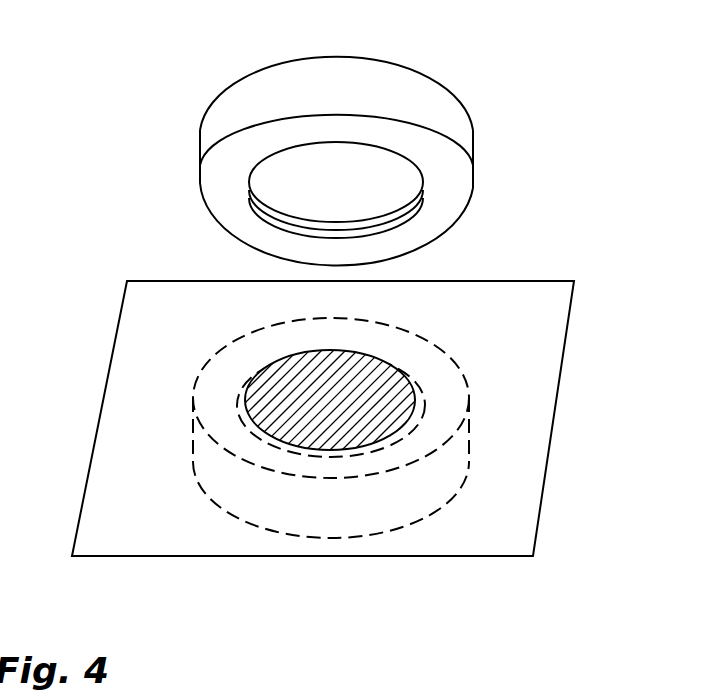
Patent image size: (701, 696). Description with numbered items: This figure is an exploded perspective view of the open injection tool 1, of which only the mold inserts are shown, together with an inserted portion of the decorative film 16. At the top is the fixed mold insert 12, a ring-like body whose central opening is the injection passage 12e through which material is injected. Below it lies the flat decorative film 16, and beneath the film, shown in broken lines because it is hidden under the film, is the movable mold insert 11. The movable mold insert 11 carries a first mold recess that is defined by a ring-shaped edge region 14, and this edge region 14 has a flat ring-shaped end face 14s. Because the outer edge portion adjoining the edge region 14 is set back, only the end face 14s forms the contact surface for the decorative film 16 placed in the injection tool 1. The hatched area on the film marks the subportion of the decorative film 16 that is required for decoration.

The injection tool 1 is at (550, 73).
The movable mold insert 11 is at (323, 527).
The fixed mold insert 12 is at (455, 125).
The injection passage 12e is at (339, 184).
The ring-shaped edge region 14 is at (420, 418).
The flat ring-shaped end face 14s is at (410, 380).
The decorative film 16 is at (123, 412).